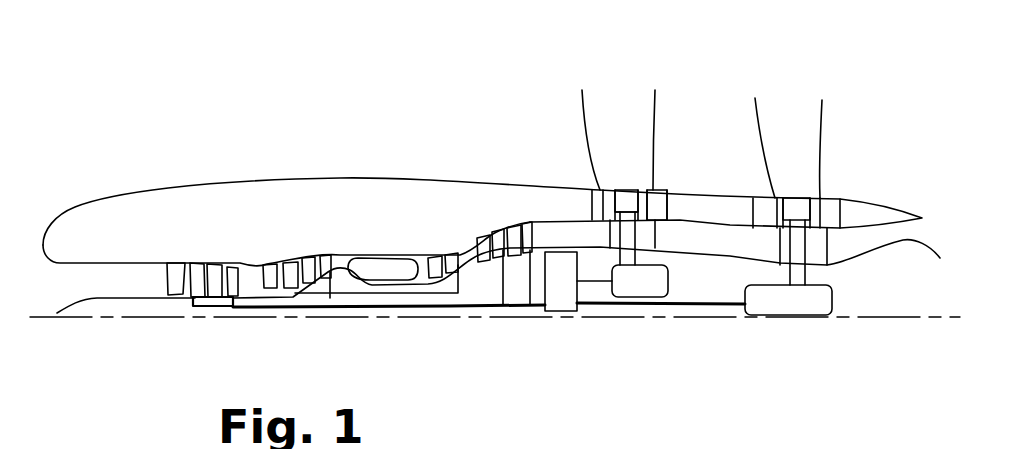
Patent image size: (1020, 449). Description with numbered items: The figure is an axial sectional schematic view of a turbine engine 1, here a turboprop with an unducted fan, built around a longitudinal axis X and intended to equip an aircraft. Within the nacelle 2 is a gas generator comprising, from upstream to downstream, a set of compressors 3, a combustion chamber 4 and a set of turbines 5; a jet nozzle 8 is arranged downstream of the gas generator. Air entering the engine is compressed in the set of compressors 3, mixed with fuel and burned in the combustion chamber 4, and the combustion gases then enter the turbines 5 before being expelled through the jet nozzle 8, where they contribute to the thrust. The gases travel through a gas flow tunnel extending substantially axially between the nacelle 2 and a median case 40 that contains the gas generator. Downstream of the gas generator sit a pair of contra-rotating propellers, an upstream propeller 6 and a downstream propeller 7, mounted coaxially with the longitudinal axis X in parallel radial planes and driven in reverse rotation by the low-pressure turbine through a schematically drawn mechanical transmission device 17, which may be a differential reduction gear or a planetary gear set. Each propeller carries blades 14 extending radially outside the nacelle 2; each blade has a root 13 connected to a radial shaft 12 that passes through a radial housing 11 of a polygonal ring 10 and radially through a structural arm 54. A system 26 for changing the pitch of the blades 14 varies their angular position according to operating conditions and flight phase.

The turbine engine 1 is at (163, 145).
The longitudinal axis X is at (115, 320).
The nacelle 2 is at (329, 198).
The set of compressors 3 is at (276, 233).
The combustion chamber 4 is at (378, 266).
The set of turbines 5 is at (490, 213).
The median case 40 is at (466, 244).
The upstream propeller 6 is at (638, 78).
The downstream propeller 7 is at (791, 98).
The jet nozzle 8 is at (918, 258).
The polygonal ring 10 is at (601, 201).
The radial housings 11 is at (668, 208).
The radial shaft 12 is at (626, 233).
The root 13 is at (633, 200).
The blade 14 is at (594, 115).
The mechanical transmission device 17 is at (558, 290).
The system for changing the pitch of the blades 26 is at (641, 279).
The structural arm 54 is at (651, 230).